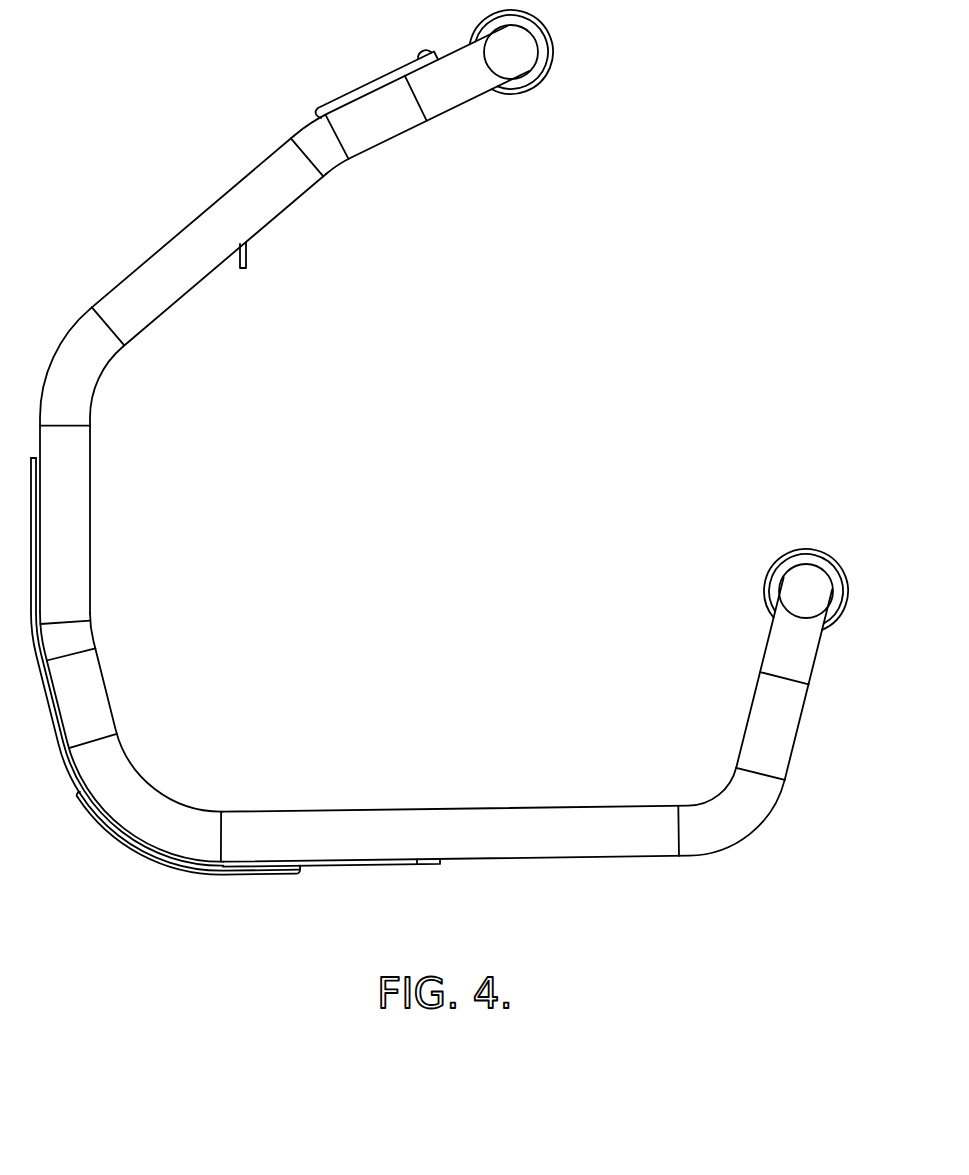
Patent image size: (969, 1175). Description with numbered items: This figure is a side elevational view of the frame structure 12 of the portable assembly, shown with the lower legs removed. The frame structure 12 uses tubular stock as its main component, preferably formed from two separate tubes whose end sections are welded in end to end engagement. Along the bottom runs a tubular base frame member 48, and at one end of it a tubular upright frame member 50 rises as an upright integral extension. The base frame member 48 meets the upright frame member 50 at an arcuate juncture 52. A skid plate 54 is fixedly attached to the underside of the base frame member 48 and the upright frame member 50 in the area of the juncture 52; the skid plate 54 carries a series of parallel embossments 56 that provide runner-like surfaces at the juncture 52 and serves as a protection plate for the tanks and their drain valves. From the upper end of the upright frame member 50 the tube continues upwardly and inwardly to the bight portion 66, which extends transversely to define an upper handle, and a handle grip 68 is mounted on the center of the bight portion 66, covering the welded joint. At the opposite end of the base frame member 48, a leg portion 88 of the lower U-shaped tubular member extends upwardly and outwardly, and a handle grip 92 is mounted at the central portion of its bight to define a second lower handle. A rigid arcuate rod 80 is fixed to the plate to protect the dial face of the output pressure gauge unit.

The frame structure 12 is at (176, 222).
The tubular base frame member 48 is at (462, 845).
The tubular upright frame member 50 is at (80, 572).
The juncture 52 is at (132, 775).
The skid plate 54 is at (335, 868).
The embossment 56 is at (148, 862).
The bight portion 66 is at (270, 202).
The handle grip 68 is at (554, 47).
The rigid arcuate rod 80 is at (378, 44).
The leg portion 88 is at (784, 729).
The handle grip 92 is at (826, 556).